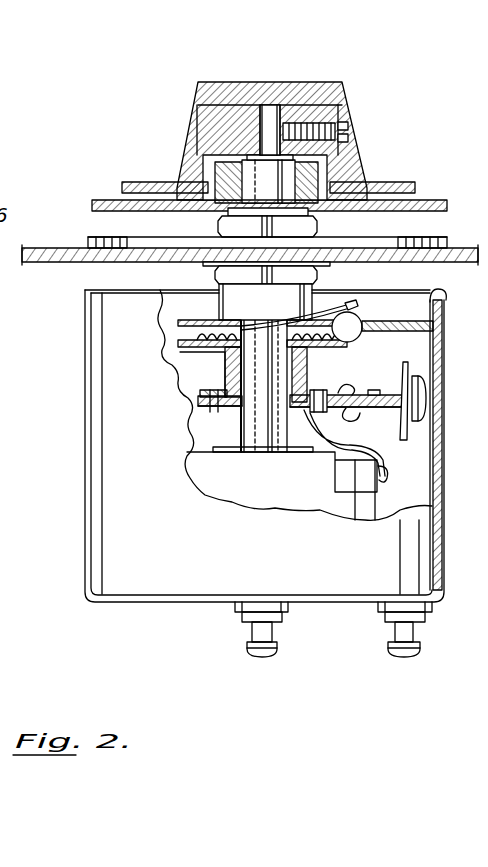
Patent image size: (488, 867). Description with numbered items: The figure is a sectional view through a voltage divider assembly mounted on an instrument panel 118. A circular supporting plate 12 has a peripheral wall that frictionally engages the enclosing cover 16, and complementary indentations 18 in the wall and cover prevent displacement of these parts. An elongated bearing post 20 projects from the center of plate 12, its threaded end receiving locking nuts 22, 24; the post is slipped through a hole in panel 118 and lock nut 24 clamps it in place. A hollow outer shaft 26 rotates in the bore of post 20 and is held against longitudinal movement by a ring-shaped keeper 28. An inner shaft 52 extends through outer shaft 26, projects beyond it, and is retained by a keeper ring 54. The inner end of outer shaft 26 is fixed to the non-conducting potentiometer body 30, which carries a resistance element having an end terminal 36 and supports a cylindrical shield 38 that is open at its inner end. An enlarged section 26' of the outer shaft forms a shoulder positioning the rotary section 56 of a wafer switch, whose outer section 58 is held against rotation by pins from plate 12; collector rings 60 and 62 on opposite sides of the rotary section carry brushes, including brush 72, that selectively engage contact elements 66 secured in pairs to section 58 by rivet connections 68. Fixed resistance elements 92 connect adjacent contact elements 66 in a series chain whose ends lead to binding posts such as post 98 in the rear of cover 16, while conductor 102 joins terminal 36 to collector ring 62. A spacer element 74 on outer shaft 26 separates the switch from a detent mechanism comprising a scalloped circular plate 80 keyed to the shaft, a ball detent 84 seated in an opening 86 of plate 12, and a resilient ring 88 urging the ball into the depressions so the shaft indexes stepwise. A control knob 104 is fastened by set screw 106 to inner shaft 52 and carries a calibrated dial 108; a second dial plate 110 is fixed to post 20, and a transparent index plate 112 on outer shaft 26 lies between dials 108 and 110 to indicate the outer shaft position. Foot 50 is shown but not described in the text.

The supporting plate 12 is at (160, 316).
The enclosing cover 16 is at (85, 466).
The indentations 18 is at (451, 303).
The bearing post 20 is at (219, 306).
The locking nut 22 is at (215, 277).
The locking nut 24 is at (218, 227).
The outer shaft 26 is at (357, 165).
The enlarged section 26' is at (221, 406).
The keeper 28 is at (312, 206).
The electrically non-conducting body 30 is at (340, 481).
The end terminal 36 is at (385, 479).
The cylindrical shield 38 is at (235, 497).
The foot 50 is at (248, 657).
The inner shaft 52 is at (268, 104).
The keeper ring 54 is at (262, 105).
The rotary section 56 is at (215, 416).
The outer section 58 is at (198, 401).
The collector ring 60 is at (210, 406).
The collector ring 62 is at (208, 390).
The contact elements 66 is at (352, 392).
The rivet connection 68 is at (374, 391).
The brush 72 is at (318, 390).
The spacer element 74 is at (180, 346).
The circular plate 80 is at (358, 335).
The ball detent 84 is at (352, 318).
The opening 86 is at (363, 322).
The resilient ring 88 is at (347, 304).
The fixed resistance elements 92 is at (418, 398).
The binding post 98 is at (396, 657).
The electrical conductor 102 is at (378, 456).
The control knob 104 is at (188, 122).
The set screw 106 is at (348, 128).
The dial 108 is at (160, 182).
The dial plate 110 is at (90, 236).
The index plate 112 is at (104, 200).
The instrument panel 118 is at (456, 232).